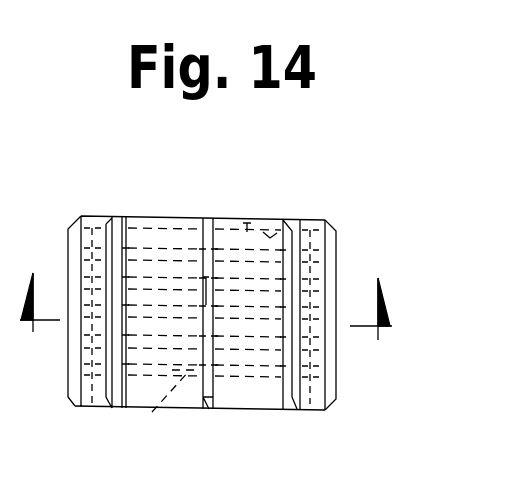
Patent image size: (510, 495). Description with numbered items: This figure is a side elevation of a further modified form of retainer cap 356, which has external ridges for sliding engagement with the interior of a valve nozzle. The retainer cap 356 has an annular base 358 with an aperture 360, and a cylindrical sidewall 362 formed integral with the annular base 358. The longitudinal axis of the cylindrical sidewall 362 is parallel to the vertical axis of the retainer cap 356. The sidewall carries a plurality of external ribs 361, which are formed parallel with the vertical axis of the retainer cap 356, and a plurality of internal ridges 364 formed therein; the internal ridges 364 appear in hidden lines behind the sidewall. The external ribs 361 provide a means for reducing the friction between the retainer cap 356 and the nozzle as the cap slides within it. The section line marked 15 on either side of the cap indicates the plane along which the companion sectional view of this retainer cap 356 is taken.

The retainer cap 356 is at (243, 185).
The annular base 358 is at (340, 229).
The aperture 360 is at (172, 232).
The external ribs 361 is at (206, 410).
The cylindrical sidewall 362 is at (62, 237).
The internal ridges 364 is at (175, 368).
The section line 15- 15 is at (206, 288).